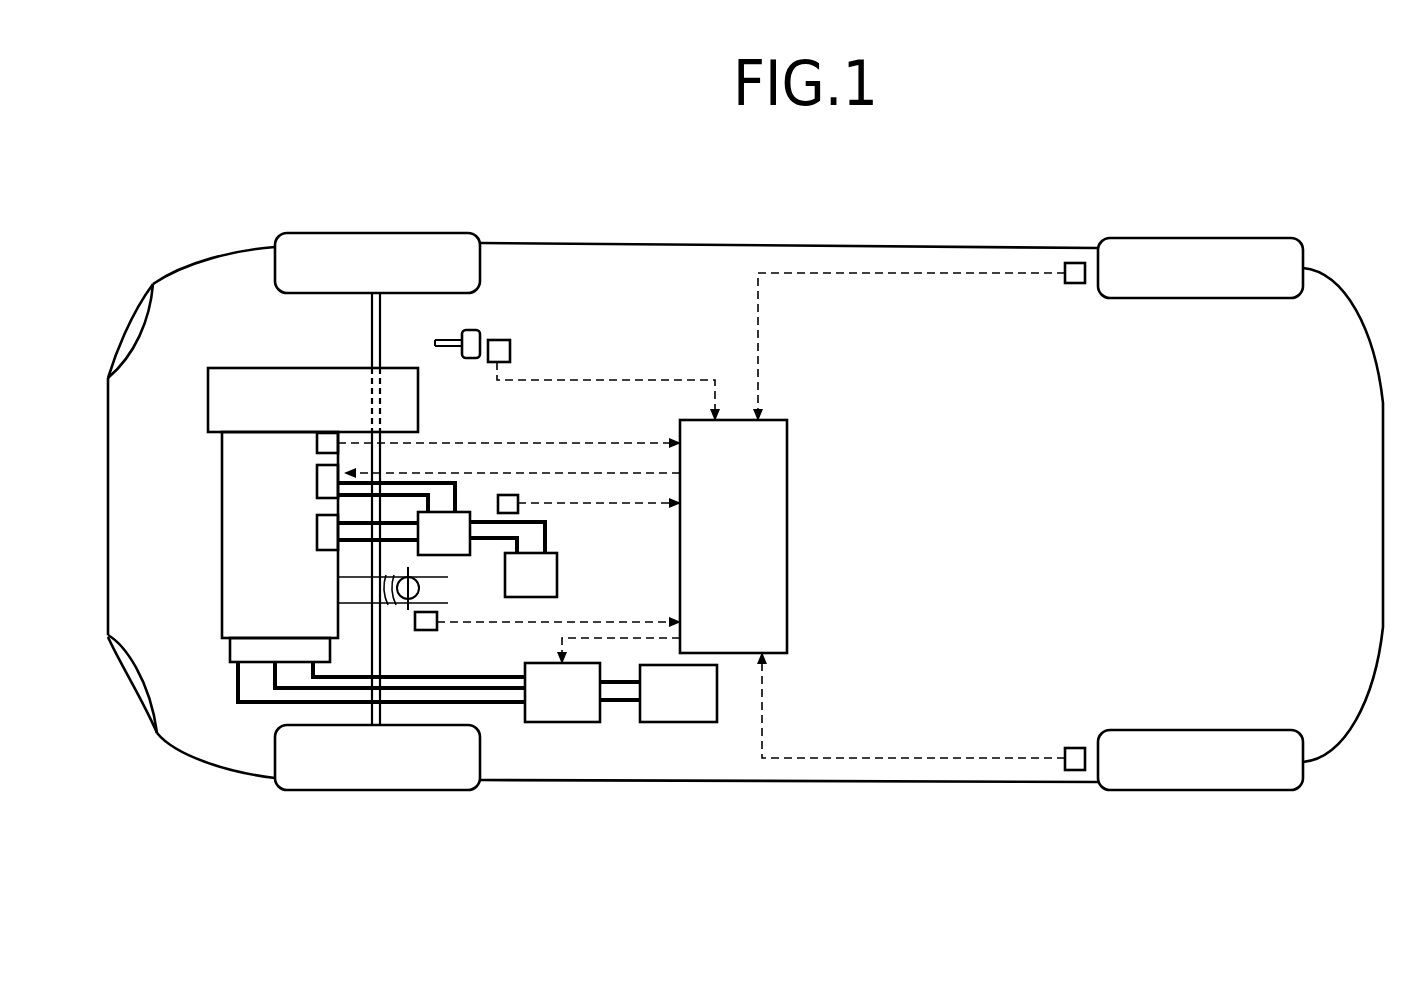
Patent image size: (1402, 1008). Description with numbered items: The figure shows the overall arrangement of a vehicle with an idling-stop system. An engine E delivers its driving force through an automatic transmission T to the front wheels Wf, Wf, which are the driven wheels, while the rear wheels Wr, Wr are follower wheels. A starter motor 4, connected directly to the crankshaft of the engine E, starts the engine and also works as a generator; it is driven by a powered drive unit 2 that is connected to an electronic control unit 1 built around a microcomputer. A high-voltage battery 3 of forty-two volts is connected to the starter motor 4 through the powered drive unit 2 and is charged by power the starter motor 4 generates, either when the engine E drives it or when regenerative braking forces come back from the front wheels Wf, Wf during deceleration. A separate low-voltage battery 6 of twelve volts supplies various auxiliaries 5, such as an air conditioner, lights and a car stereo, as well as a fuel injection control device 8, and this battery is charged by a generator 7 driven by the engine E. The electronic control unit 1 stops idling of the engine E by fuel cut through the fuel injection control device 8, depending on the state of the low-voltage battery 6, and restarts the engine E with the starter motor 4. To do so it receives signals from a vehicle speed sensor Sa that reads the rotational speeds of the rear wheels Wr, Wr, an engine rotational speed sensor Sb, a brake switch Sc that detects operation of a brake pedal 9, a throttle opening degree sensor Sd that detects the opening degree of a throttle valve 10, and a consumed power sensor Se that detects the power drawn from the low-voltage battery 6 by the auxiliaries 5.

The electronic control unit 1 is at (746, 570).
The powered drive unit 2 is at (573, 710).
The high-voltage battery 3 is at (689, 711).
The starter motor 4 is at (245, 650).
The auxiliaries 5 is at (542, 593).
The low-voltage battery 6 is at (455, 551).
The generator 7 is at (317, 533).
The fuel injection control device 8 is at (317, 483).
The brake pedal 9 is at (462, 342).
The throttle valve 10 is at (405, 600).
The engine E is at (235, 545).
The automatic transmission T is at (235, 405).
The front wheels Wf is at (370, 258).
The rear wheels Wr is at (1180, 260).
The vehicle speed sensor Sa is at (1072, 263).
The engine rotational speed sensor Sb is at (327, 438).
The brake switch Sc is at (510, 350).
The throttle opening degree sensor Sd is at (437, 626).
The consumed power sensor Se is at (518, 505).